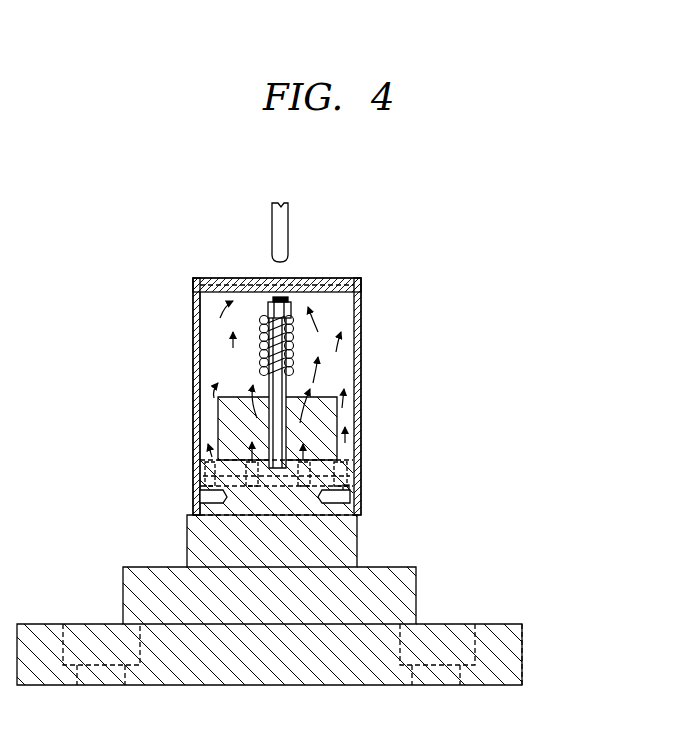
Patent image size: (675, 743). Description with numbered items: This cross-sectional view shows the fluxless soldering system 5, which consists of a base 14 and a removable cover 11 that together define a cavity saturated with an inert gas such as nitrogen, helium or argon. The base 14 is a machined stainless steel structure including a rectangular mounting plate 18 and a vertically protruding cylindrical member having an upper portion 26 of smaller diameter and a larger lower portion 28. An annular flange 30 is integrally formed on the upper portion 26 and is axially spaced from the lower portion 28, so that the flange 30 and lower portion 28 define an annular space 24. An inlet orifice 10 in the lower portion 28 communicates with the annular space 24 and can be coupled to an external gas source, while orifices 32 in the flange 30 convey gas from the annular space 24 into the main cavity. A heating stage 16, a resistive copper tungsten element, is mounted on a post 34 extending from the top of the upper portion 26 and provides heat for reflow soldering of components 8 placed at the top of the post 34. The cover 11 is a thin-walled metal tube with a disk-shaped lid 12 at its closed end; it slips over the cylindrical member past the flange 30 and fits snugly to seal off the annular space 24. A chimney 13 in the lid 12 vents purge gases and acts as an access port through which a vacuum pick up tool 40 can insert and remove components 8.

The system 5 is at (443, 226).
The components 8 is at (276, 296).
The inlet orifice 10 is at (338, 500).
The cover 11 is at (364, 352).
The lid 12 is at (339, 276).
The chimney 13 is at (294, 283).
The base 14 is at (504, 620).
The heating stage 16 is at (262, 333).
The mounting plate 18 is at (523, 656).
The annular space 24 is at (346, 481).
The upper portion 26 is at (231, 423).
The lower portion 28 is at (276, 497).
The annular flange 30 is at (211, 469).
The orifices 32 is at (253, 463).
The post 34 is at (267, 380).
The vacuum pick up tool 40 is at (271, 216).